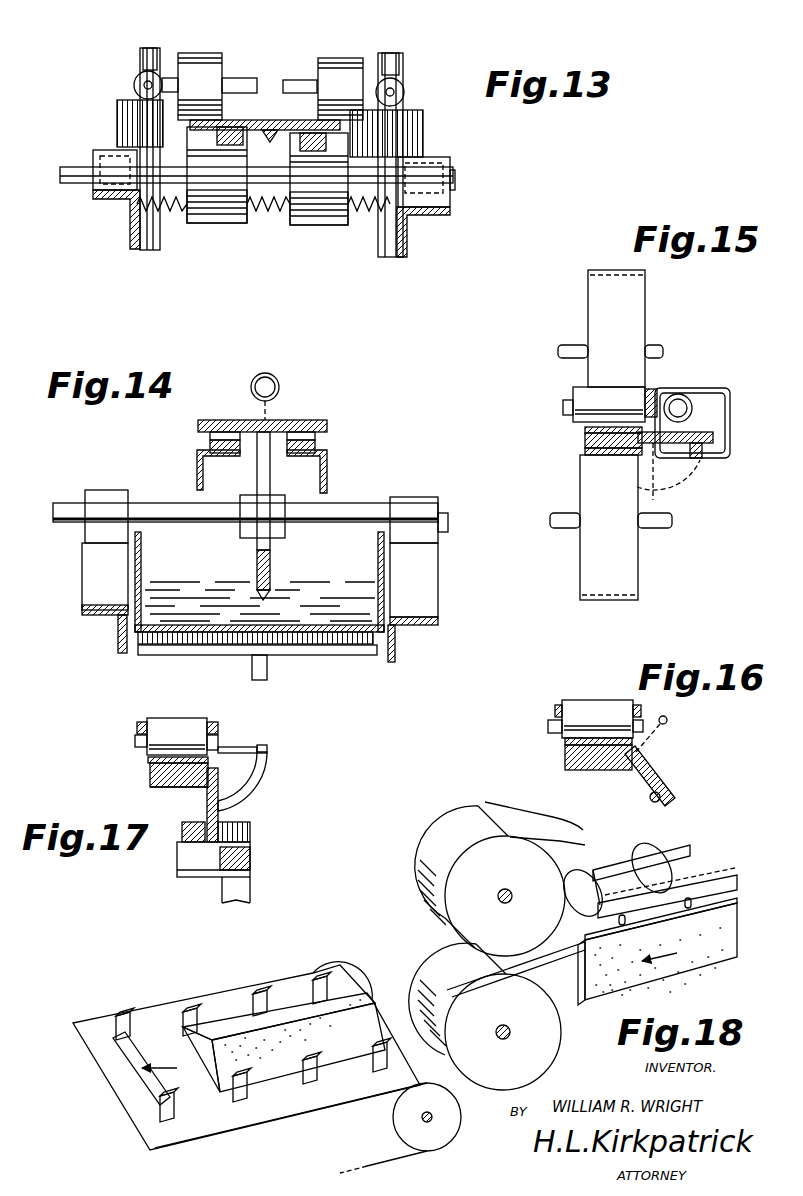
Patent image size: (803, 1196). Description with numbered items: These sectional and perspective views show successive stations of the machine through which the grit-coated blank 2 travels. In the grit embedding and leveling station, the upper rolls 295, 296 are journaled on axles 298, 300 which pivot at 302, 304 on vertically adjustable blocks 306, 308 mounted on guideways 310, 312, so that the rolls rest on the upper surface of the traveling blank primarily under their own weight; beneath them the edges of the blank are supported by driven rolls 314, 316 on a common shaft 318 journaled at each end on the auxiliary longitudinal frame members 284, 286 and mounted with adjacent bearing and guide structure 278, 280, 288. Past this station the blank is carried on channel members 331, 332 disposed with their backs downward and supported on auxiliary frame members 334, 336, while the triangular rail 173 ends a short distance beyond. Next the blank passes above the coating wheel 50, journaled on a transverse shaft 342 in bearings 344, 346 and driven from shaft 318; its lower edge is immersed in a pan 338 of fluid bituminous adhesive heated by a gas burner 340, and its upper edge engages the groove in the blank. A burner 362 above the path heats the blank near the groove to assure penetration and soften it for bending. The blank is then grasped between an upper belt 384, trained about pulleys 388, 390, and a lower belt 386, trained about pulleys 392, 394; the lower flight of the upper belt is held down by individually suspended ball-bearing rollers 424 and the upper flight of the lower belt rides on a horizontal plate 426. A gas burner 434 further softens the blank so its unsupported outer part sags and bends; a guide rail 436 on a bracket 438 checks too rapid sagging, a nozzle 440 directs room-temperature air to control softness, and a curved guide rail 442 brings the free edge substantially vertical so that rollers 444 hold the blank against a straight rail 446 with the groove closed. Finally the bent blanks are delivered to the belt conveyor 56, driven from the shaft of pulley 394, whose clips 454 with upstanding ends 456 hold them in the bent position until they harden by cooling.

In FIG. 13, the blank 2 is at (290, 120).
In FIG. 14, the blank 2 is at (310, 420).
In FIG. 15, the blank 2 is at (698, 435).
In FIG. 16, the blank 2 is at (656, 779).
In FIG. 17, the blank 2 is at (222, 789).
In FIG. 18, the blank 2 is at (370, 1010).
In FIG. 14, the coating wheel 50 is at (275, 570).
In FIG. 18, the belt conveyor 56 is at (160, 1008).
In FIG. 13, the triangular rail 173 is at (270, 143).
In FIG. 13, the left bearing block 278 is at (117, 125).
In FIG. 13, the right bearing block 280 is at (425, 140).
In FIG. 13, the auxiliary longitudinal frame member 284 is at (430, 211).
In FIG. 13, the auxiliary longitudinal frame member 286 is at (110, 200).
In FIG. 13, the left slide block 288 is at (93, 158).
In FIG. 13, the upper roll 295 is at (340, 58).
In FIG. 13, the upper roll 296 is at (195, 53).
In FIG. 13, the axle 298 is at (298, 80).
In FIG. 13, the axle 300 is at (240, 78).
In FIG. 13, the pivot 302 is at (405, 90).
In FIG. 13, the pivot 304 is at (134, 85).
In FIG. 13, the vertically adjustable block 306 is at (405, 65).
In FIG. 13, the vertically adjustable block 308 is at (141, 62).
In FIG. 13, the guideway 310 is at (385, 53).
In FIG. 13, the guideway 312 is at (150, 48).
In FIG. 13, the driven roll 314 is at (330, 226).
In FIG. 13, the driven roll 316 is at (220, 224).
In FIG. 13, the common shaft 318 is at (75, 184).
In FIG. 13, the channel member 331 is at (232, 146).
In FIG. 14, the channel member 331 is at (208, 440).
In FIG. 13, the channel member 332 is at (310, 152).
In FIG. 14, the channel member 332 is at (318, 446).
In FIG. 14, the auxiliary frame member 334 is at (197, 470).
In FIG. 14, the auxiliary frame member 336 is at (328, 478).
In FIG. 14, the pan 338 is at (380, 595).
In FIG. 14, the gas burner 340 is at (320, 656).
In FIG. 14, the transverse shaft 342 is at (450, 522).
In FIG. 14, the bearing 344 is at (105, 492).
In FIG. 14, the bearing 346 is at (415, 497).
In FIG. 14, the burner 362 is at (278, 378).
In FIG. 15, the upper belt 384 is at (585, 430).
In FIG. 16, the upper belt 384 is at (565, 741).
In FIG. 17, the upper belt 384 is at (148, 760).
In FIG. 18, the upper belt 384 is at (460, 813).
In FIG. 15, the lower belt 386 is at (585, 441).
In FIG. 16, the lower belt 386 is at (565, 756).
In FIG. 17, the lower belt 386 is at (150, 775).
In FIG. 18, the lower belt 386 is at (437, 966).
In FIG. 15, the pulley 388 is at (635, 310).
In FIG. 18, the pulley 390 is at (540, 863).
In FIG. 15, the pulley 392 is at (620, 583).
In FIG. 18, the pulley 394 is at (485, 1016).
In FIG. 15, the ball-bearing roller 424 is at (590, 392).
In FIG. 16, the ball-bearing roller 424 is at (592, 700).
In FIG. 17, the ball-bearing roller 424 is at (178, 718).
In FIG. 18, the ball-bearing roller 424 is at (640, 852).
In FIG. 15, the horizontal plate 426 is at (595, 455).
In FIG. 17, the horizontal plate 426 is at (178, 789).
In FIG. 15, the gas burner 434 is at (690, 400).
In FIG. 15, the guide rail 436 is at (700, 459).
In FIG. 16, the guide rail 436 is at (650, 797).
In FIG. 15, the bracket 438 is at (725, 393).
In FIG. 16, the nozzle 440 is at (668, 721).
In FIG. 17, the guide rail 442 is at (264, 781).
In FIG. 17, the roller 444 is at (250, 828).
In FIG. 17, the straight rail 446 is at (178, 850).
In FIG. 18, the clip 454 is at (125, 1064).
In FIG. 18, the upstanding end 456 is at (320, 978).